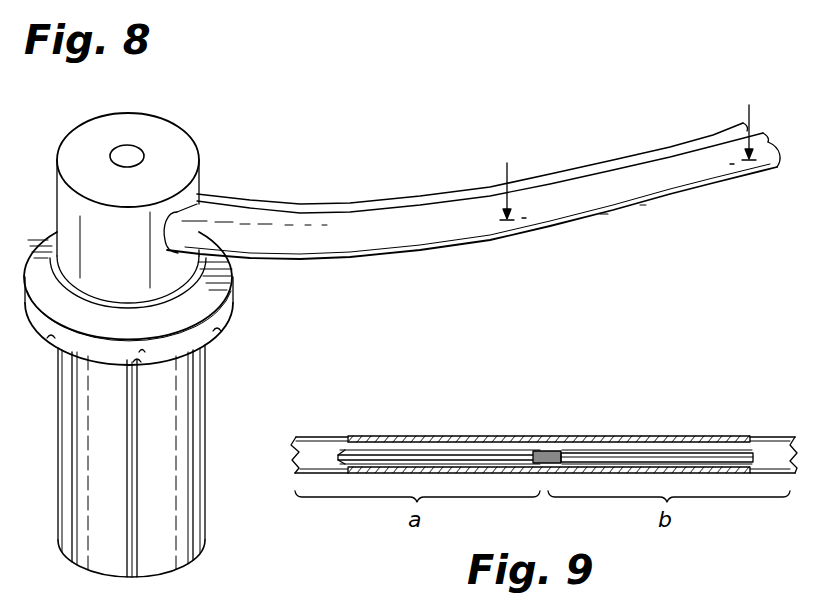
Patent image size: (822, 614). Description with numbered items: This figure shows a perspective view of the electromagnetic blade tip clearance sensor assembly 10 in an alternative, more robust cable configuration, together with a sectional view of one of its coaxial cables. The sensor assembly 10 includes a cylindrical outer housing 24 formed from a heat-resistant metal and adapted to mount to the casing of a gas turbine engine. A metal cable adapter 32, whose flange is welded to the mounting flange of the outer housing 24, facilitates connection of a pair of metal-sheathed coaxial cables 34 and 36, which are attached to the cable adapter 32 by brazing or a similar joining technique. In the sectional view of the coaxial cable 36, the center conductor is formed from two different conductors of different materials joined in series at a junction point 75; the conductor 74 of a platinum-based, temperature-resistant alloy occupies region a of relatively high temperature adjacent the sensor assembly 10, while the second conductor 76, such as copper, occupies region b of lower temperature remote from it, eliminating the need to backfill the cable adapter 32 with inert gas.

In FIG. 8, the sensor assembly 10 is at (213, 132).
In FIG. 8, the metal cable adapter 32 is at (63, 204).
In FIG. 8, the cylindrical outer housing 24 is at (63, 430).
In FIG. 8, the metal-sheathed coaxial cable 34 is at (368, 208).
In FIG. 8, the metal-sheathed coaxial cable 36 is at (392, 239).
In FIG. 9, the metal-sheathed coaxial cable 36 is at (358, 428).
In FIG. 9, the conductor 74 is at (430, 455).
In FIG. 9, the junction point 75 is at (546, 455).
In FIG. 9, the second inner cable section 76 is at (643, 456).